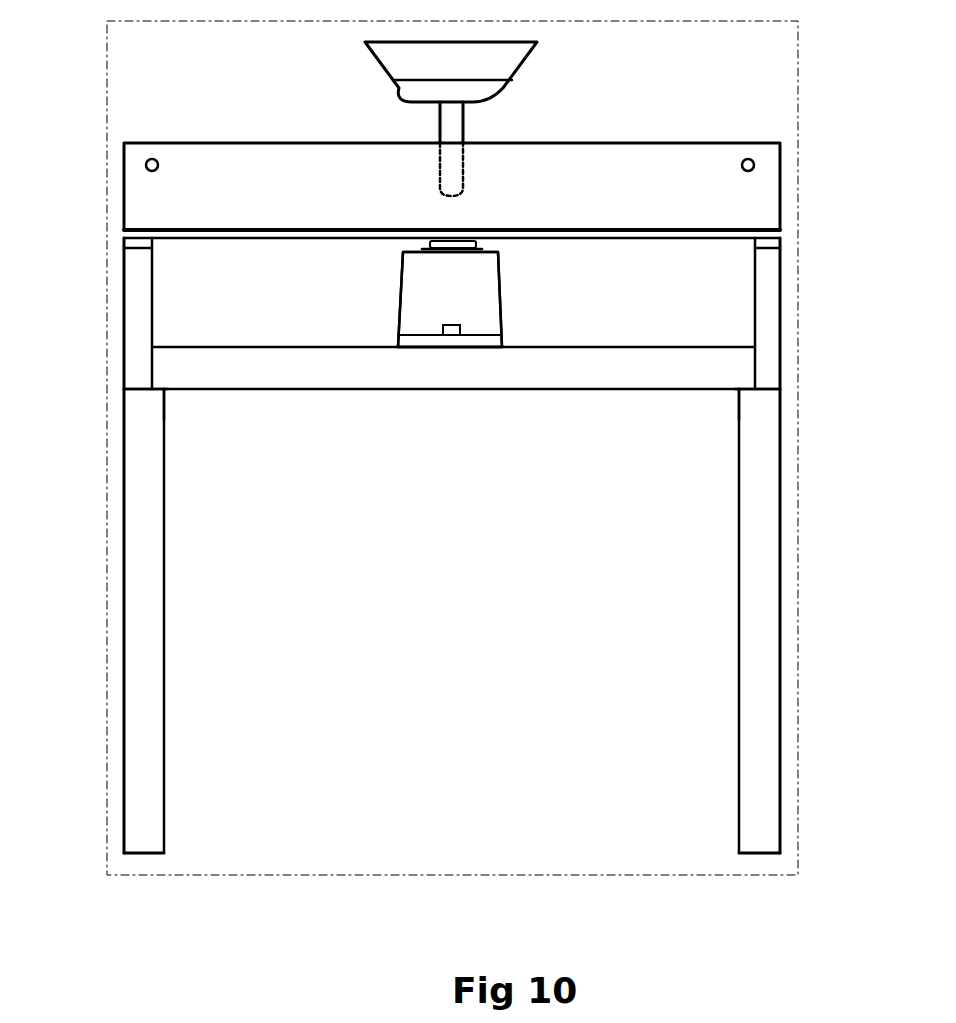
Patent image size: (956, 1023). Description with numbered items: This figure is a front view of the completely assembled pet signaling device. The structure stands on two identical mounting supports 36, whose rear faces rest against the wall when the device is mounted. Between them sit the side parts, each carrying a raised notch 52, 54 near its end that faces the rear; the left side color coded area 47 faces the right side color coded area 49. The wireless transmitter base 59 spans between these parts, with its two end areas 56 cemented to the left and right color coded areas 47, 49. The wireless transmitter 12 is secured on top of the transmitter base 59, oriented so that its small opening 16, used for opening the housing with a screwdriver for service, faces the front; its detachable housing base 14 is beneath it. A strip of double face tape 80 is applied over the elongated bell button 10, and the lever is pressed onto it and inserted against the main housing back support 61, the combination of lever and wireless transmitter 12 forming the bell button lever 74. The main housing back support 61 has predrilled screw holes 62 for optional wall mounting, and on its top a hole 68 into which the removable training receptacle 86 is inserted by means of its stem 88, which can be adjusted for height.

The elongated bell button 10 is at (483, 243).
The wireless transmitter 12 is at (455, 285).
The detachable housing base of transmitter 14 is at (470, 337).
The small opening 16 is at (445, 328).
The mounting supports 36 is at (133, 657).
The left side color coded area 47 is at (168, 393).
The right side color coded area 49 is at (735, 395).
The raised notch on left side 52 is at (142, 250).
The raised notch on right side 54 is at (767, 242).
The transmitter base end areas 56 is at (168, 393).
The wireless transmitter base 59 is at (403, 372).
The main housing back support 61 is at (630, 205).
The predrilled screw holes 62 is at (143, 166).
The hole 68 is at (455, 165).
The bell button lever 74 is at (777, 233).
The double face tape 80 is at (480, 240).
The training receptacle 86 is at (503, 55).
The stem of removable training receptacle 88 is at (455, 117).